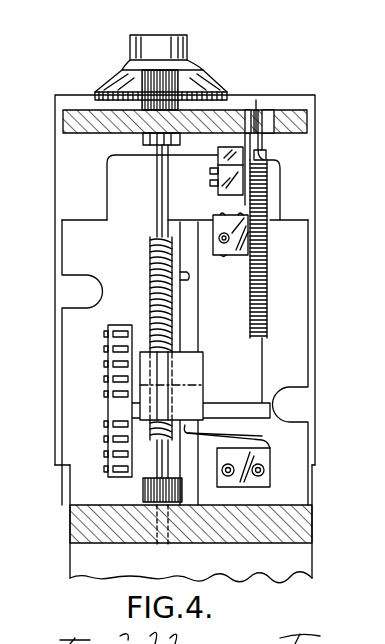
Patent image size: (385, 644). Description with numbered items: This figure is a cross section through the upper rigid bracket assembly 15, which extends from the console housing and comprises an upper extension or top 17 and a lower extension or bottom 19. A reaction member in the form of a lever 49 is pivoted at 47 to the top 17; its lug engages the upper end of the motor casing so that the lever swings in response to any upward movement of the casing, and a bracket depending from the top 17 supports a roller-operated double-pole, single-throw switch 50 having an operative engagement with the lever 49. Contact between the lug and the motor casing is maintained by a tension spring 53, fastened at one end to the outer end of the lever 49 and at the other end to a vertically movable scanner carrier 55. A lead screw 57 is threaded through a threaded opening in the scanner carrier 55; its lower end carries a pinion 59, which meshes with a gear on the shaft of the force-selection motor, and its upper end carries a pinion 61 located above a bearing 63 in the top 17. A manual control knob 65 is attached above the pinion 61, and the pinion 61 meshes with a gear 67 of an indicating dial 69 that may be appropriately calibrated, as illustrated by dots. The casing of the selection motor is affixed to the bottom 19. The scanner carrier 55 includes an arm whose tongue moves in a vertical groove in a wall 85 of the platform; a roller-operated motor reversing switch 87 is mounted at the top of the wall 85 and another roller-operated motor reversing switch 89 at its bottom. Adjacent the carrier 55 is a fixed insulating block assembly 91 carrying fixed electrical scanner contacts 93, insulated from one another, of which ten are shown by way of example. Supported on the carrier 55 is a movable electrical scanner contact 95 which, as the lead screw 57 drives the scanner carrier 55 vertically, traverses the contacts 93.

The upper rigid bracket assembly 15 is at (85, 549).
The top 17 is at (66, 120).
The bottom 19 is at (80, 525).
The pivot 47 is at (287, 113).
The lever 49 is at (265, 150).
The roller-operated double-pole, single-throw switch 50 is at (219, 170).
The tension spring 53 is at (268, 272).
The scanner carrier 55 is at (175, 390).
The lead screw 57 is at (151, 262).
The pinion 59 is at (153, 498).
The pinion 61 is at (141, 81).
The bearing 63 is at (145, 140).
The manual control knob 65 is at (142, 45).
The gear 67 is at (226, 94).
The indicating dial 69 is at (186, 86).
The wall 85 is at (300, 293).
The roller-operated motor reversing switch 87 is at (221, 222).
The roller-operated motor reversing switch 89 is at (266, 454).
The fixed insulating block assembly 91 is at (119, 326).
The fixed electrical scanner contacts 93 is at (104, 364).
The movable electrical scanner contact 95 is at (118, 410).